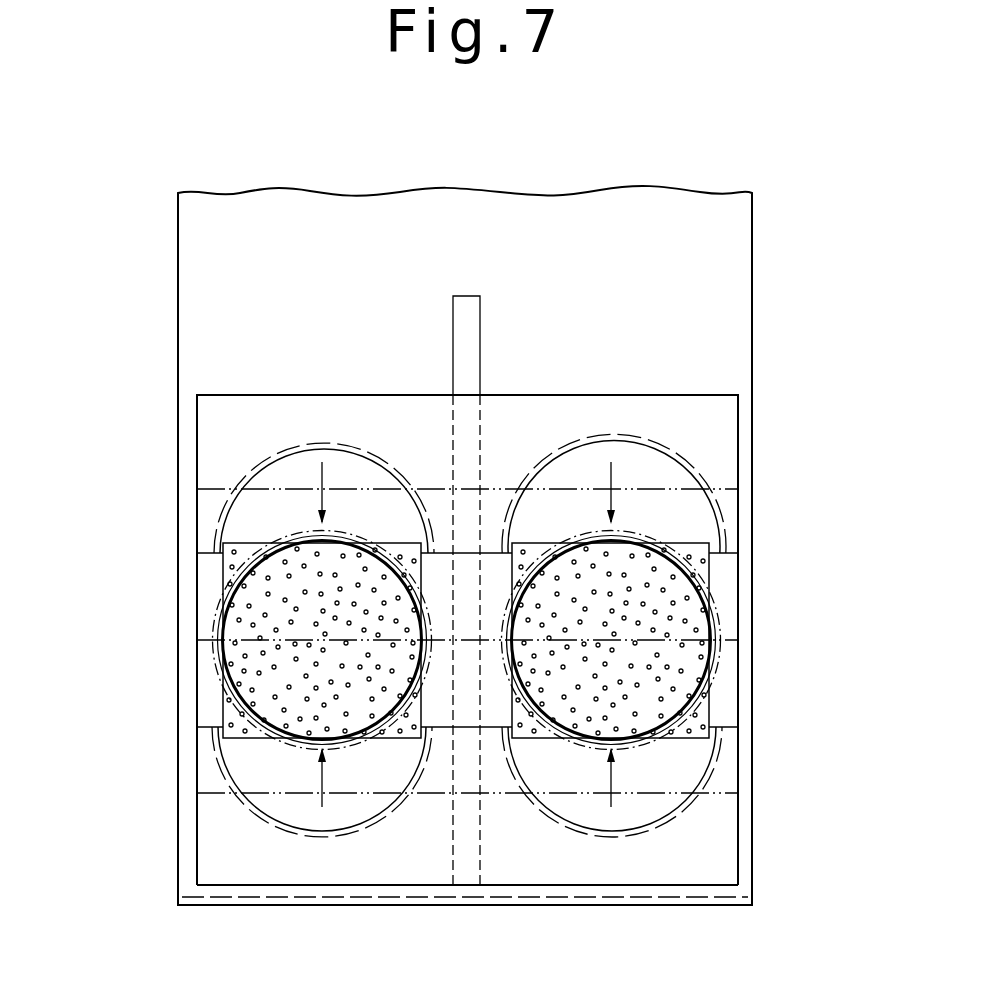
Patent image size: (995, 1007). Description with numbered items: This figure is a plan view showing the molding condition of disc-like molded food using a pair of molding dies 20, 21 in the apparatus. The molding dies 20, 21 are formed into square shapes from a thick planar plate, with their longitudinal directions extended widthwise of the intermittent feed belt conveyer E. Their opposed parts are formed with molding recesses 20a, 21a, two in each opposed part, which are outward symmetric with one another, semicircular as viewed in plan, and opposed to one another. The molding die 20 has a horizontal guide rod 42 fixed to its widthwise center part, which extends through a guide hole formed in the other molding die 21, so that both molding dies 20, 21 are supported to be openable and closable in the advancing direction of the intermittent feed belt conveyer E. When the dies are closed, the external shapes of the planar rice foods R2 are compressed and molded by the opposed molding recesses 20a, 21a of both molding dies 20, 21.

The intermittent feed belt conveyer E is at (177, 290).
The molding die 20 is at (576, 886).
The molding recess 20a is at (339, 831).
The molding die 21 is at (561, 393).
The molding recess 21a is at (342, 452).
The horizontal guide rod 42 is at (474, 300).
The planar rice food R2 is at (250, 557).